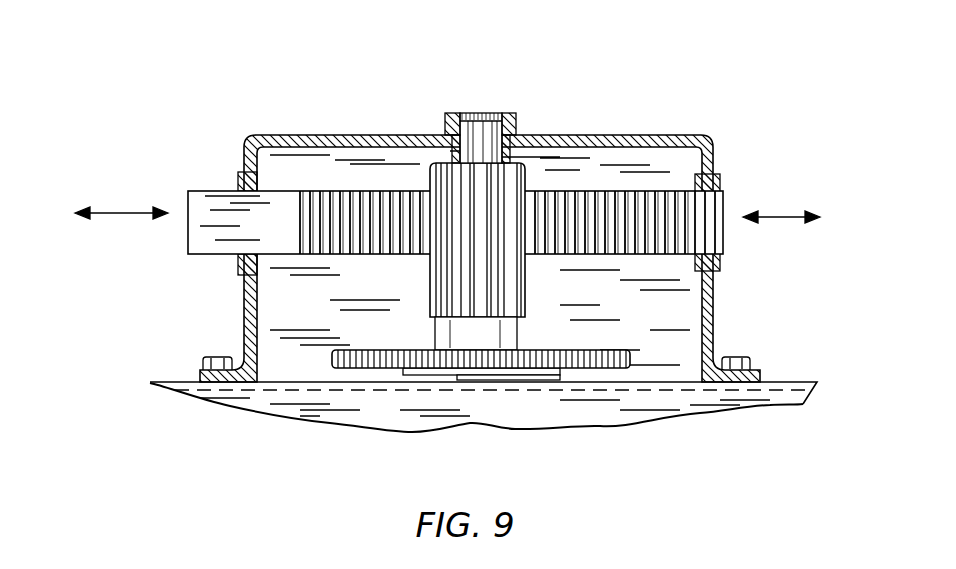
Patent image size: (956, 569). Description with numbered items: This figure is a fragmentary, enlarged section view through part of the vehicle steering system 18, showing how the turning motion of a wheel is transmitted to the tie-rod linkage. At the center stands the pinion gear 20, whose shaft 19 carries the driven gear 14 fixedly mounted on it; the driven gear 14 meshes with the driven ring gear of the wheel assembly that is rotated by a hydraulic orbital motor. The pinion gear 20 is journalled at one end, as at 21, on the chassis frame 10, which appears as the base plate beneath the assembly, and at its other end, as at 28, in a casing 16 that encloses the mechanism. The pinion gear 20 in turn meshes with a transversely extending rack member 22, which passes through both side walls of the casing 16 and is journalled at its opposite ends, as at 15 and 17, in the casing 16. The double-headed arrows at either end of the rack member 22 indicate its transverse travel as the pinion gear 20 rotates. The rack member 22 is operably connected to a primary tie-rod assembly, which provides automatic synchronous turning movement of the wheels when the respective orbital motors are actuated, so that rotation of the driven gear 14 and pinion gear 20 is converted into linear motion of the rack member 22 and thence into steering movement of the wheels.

The chassis frame 10 is at (792, 379).
The driven gear 14 is at (578, 350).
The rack member journal 15 is at (240, 186).
The casing 16 is at (310, 134).
The rack member journal 17 is at (718, 183).
The steering system 18 is at (600, 112).
The shaft 19 is at (480, 140).
The pinion gear 20 is at (532, 167).
The journal 21 is at (484, 380).
The rack member 22 is at (603, 200).
The journal 28 is at (506, 115).